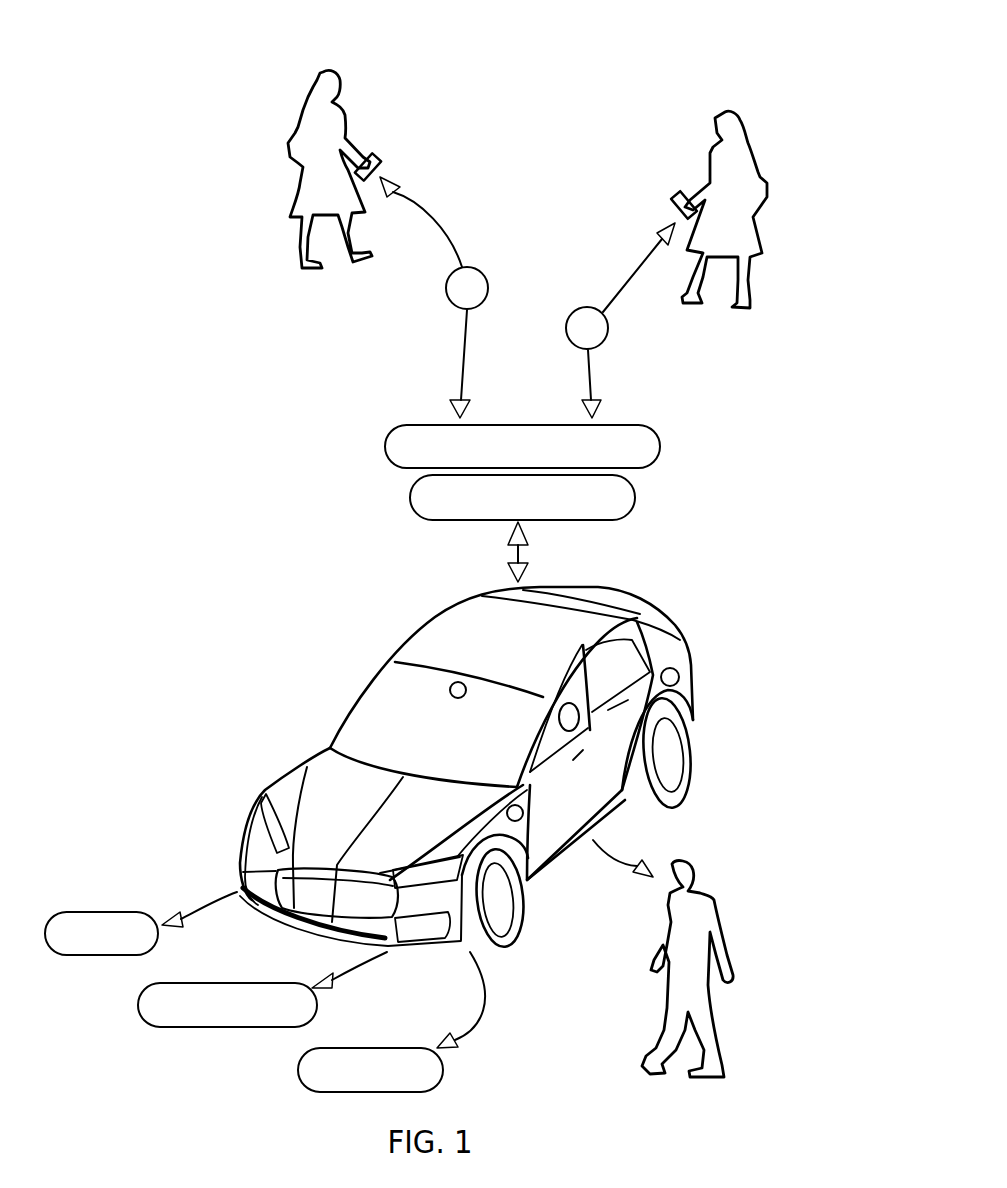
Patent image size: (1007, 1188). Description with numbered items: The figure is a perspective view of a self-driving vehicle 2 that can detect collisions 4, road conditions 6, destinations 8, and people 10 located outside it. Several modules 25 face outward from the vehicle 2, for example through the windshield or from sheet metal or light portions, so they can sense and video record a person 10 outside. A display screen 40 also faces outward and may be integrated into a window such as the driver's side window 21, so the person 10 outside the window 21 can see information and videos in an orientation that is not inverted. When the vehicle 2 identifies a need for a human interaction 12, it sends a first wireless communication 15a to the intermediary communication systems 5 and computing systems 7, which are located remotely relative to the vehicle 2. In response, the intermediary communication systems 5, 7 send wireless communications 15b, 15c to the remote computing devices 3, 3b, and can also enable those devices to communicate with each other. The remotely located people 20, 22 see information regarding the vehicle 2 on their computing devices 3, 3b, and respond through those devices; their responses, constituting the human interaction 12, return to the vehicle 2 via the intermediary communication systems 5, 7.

The self-driving vehicle 2 is at (496, 766).
The remote computing device 3 is at (676, 203).
The remote computing device 3b is at (380, 164).
The collision 4 is at (72, 957).
The communication systems 5 is at (660, 443).
The road condition 6 is at (177, 1027).
The computing systems 7 is at (635, 495).
The destination 8 is at (330, 1092).
The person 10 is at (713, 898).
The human interaction 12 is at (445, 287).
The first wireless communication 15a is at (522, 548).
The wireless communication 15b is at (582, 371).
The wireless communication 15c is at (468, 340).
The remotely located human 20 is at (712, 148).
The driver's side window 21 is at (547, 757).
The person 22 is at (343, 110).
The module 25 is at (448, 688).
The display screen 40 is at (580, 728).